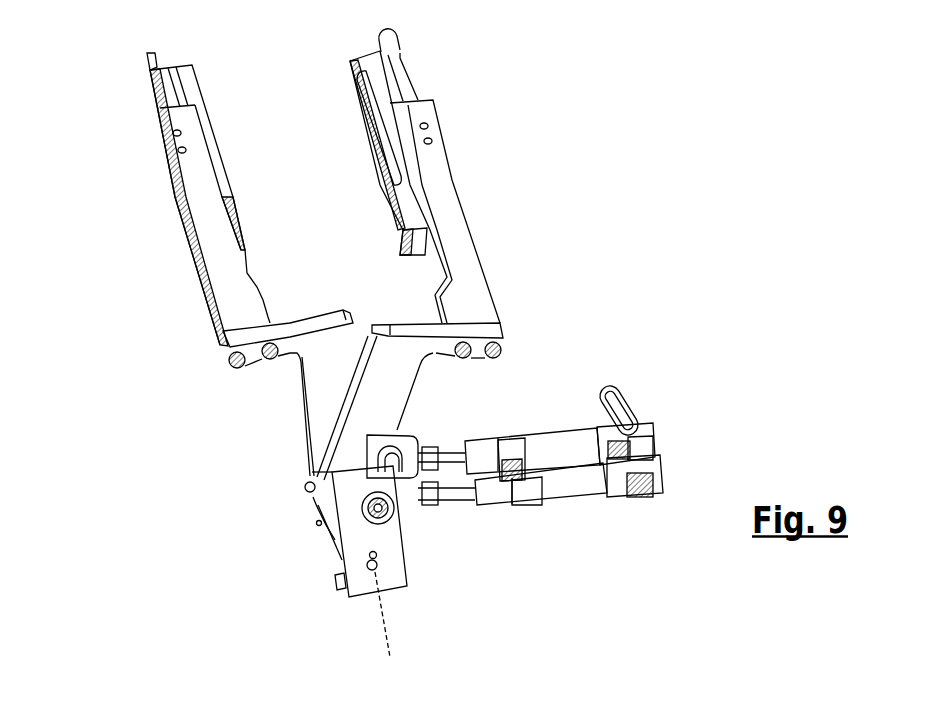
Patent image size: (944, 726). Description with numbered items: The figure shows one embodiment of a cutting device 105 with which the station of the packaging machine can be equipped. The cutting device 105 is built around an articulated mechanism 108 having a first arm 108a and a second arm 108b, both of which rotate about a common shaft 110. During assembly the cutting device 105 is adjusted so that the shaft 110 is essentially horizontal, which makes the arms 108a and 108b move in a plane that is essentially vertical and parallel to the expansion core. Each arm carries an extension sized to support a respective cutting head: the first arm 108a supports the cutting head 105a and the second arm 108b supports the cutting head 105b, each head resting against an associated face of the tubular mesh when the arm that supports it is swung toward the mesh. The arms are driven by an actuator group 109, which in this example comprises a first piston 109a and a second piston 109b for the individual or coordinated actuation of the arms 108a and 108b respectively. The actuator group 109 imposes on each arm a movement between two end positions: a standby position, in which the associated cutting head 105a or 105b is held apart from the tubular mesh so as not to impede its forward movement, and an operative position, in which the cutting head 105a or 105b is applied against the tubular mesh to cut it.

The cutting device 105 is at (563, 152).
The first cutting head 105a is at (160, 88).
The second cutting head 105b is at (403, 61).
The articulated mechanism 108 is at (307, 490).
The first arm 108a is at (313, 403).
The second arm 108b is at (400, 392).
The actuator group 109 is at (553, 483).
The first piston 109a is at (630, 497).
The second piston 109b is at (643, 428).
The common shaft 110 is at (383, 628).